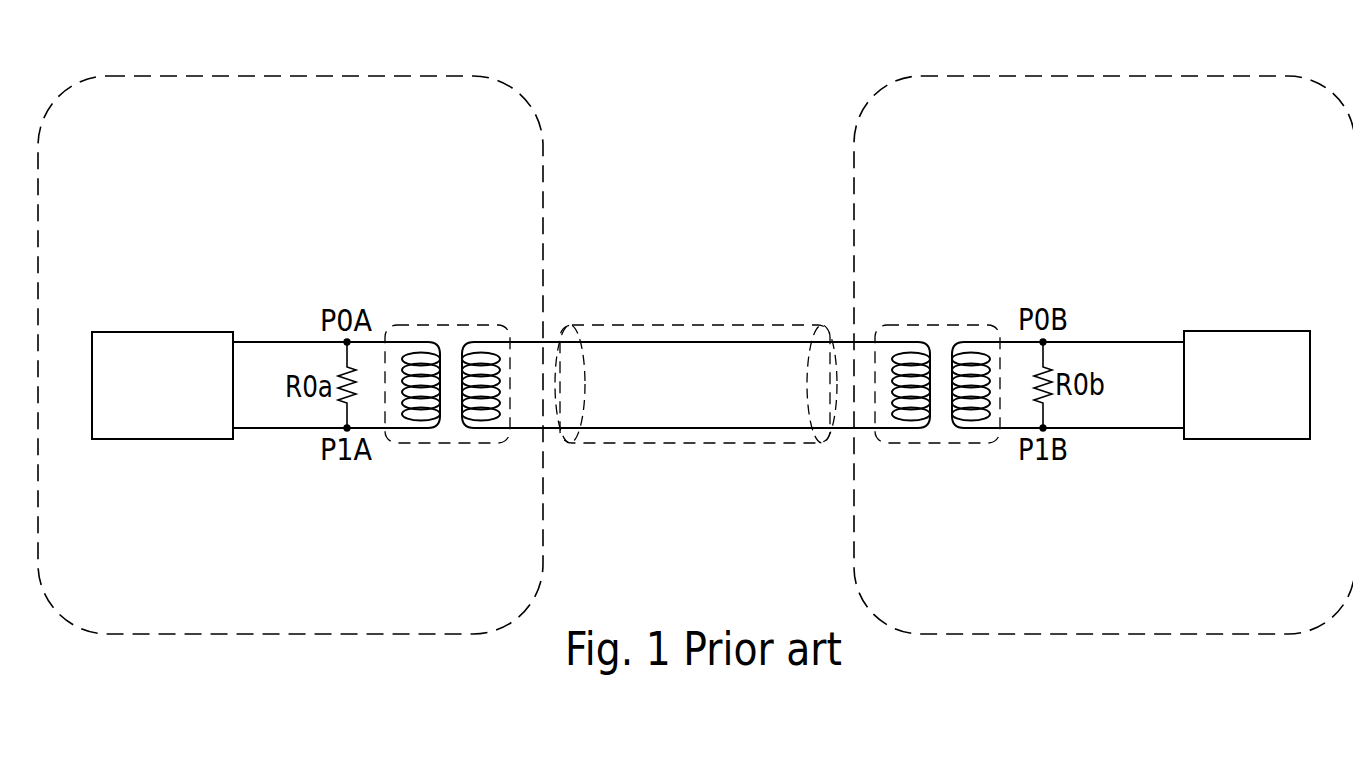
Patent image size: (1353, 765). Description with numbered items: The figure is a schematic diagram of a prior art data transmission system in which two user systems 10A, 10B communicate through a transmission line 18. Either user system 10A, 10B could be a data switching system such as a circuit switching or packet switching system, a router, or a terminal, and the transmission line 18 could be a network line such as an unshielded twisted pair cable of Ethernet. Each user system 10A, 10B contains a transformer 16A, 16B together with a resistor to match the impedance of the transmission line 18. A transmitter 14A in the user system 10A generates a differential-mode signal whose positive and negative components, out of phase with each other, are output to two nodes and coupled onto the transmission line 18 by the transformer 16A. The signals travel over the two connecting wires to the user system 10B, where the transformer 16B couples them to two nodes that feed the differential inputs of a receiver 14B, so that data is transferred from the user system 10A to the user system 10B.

The user system 10A is at (543, 190).
The user system 10B is at (854, 173).
The transmitter 14A is at (137, 402).
The receiver 14B is at (1225, 400).
The transformer 16A is at (422, 325).
The transformer 16B is at (912, 325).
The transmission line 18 is at (643, 325).